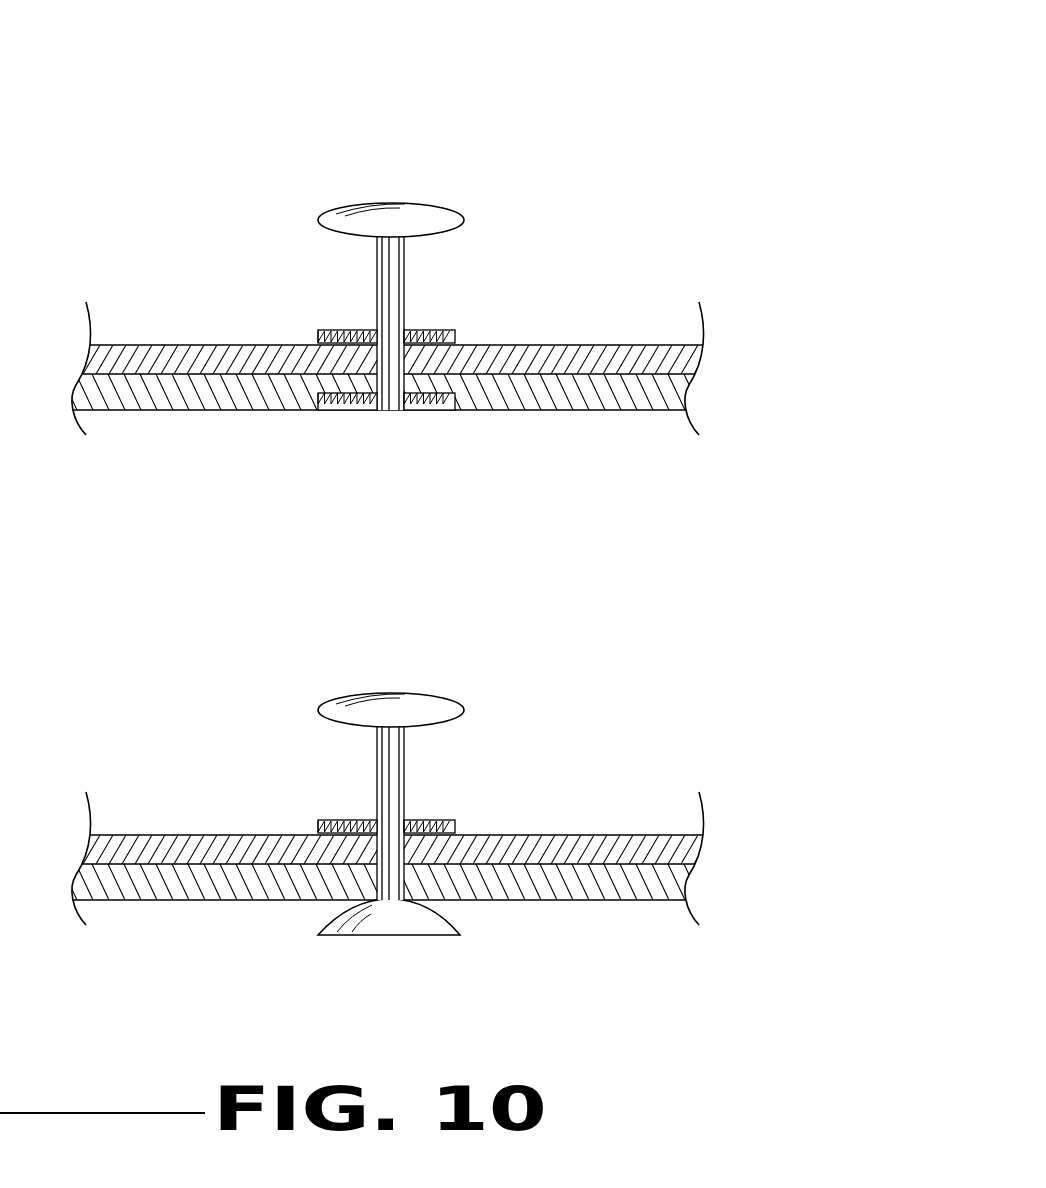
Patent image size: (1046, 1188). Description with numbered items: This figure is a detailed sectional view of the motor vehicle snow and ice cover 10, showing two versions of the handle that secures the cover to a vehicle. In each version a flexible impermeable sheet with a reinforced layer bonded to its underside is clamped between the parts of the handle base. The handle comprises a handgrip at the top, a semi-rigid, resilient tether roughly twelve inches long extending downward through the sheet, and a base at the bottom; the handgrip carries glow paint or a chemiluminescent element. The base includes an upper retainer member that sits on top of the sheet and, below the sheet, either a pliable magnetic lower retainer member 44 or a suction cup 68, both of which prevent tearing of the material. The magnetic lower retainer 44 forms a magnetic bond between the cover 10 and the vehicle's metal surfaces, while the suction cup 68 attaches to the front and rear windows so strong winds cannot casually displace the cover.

The motor vehicle snow and ice cover 10 is at (606, 102).
The pliable magnetic lower retainer member 44 is at (423, 411).
The suction cup 68 is at (389, 956).